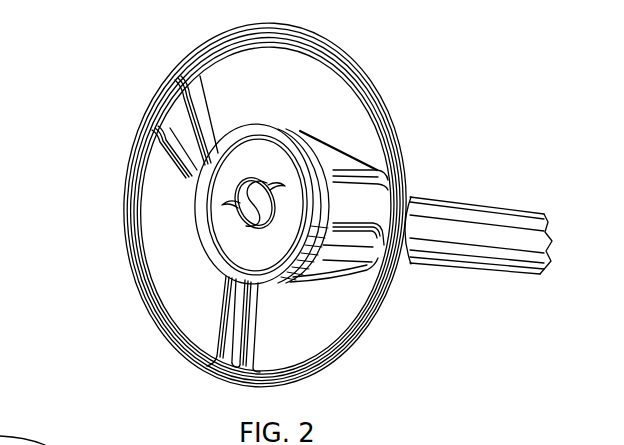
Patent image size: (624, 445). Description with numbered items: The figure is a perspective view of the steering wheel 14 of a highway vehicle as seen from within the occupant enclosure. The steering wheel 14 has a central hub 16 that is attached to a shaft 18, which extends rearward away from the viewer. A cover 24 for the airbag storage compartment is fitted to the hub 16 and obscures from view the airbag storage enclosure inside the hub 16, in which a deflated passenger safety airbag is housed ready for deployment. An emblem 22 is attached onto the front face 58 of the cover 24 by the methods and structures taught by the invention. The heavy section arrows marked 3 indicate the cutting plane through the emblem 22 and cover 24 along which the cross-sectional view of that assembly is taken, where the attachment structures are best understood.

The steering wheel 14 is at (508, 84).
The hub 16 is at (356, 154).
The shaft 18 is at (450, 204).
The emblem 22 is at (244, 199).
The cover 24 is at (240, 243).
The front face 58 is at (237, 170).
The section line 3- 3 is at (262, 158).